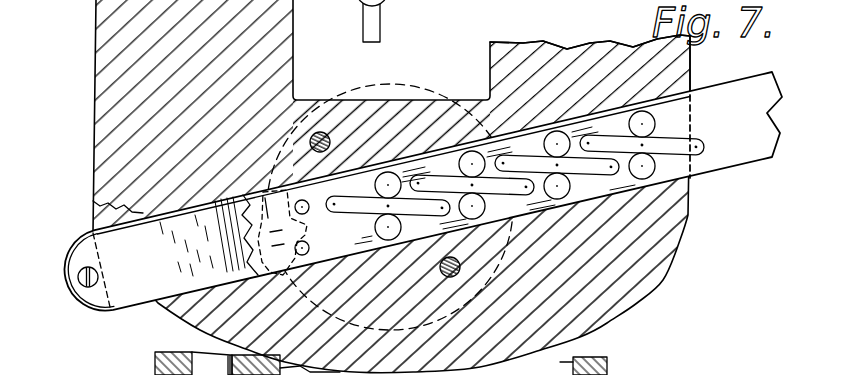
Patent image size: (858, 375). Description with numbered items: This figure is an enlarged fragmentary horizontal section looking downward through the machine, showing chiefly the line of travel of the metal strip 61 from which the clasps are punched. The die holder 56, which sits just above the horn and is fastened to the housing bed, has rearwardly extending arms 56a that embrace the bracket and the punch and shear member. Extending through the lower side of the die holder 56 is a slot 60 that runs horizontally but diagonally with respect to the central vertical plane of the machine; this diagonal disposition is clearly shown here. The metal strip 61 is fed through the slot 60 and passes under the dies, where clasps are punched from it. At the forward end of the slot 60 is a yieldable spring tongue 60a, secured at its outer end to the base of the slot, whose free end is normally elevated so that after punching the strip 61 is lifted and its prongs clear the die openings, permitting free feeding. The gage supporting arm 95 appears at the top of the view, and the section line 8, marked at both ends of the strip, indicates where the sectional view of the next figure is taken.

The die holder 56 is at (94, 123).
The rearwardly extending arms of the die holder 56a is at (572, 58).
The slot 60 is at (93, 201).
The spring tongue 60a is at (148, 285).
The metal strip 61 is at (747, 161).
The gage supporting arm 95 is at (381, 17).
The section line 8- 8 is at (745, 123).